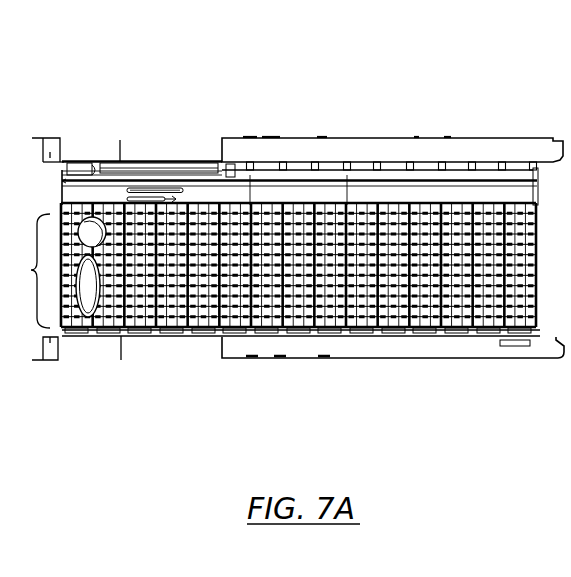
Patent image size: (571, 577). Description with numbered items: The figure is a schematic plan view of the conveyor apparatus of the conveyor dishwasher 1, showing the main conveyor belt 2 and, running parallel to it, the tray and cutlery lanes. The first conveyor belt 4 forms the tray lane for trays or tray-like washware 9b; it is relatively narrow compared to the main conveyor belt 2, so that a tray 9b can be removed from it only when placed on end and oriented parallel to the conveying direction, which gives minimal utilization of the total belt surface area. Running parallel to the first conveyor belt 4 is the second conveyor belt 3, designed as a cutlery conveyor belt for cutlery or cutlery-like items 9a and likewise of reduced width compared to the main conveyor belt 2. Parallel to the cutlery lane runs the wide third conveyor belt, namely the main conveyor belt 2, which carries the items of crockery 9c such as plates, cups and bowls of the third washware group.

The conveyor dishwasher 1 is at (513, 153).
The main conveyor belt 2 is at (270, 196).
The second conveyor belt 3 is at (362, 187).
The first conveyor belt 4 is at (305, 165).
The items of cutlery 9a is at (143, 192).
The trays 9b is at (198, 165).
The items of crockery 9c is at (90, 238).